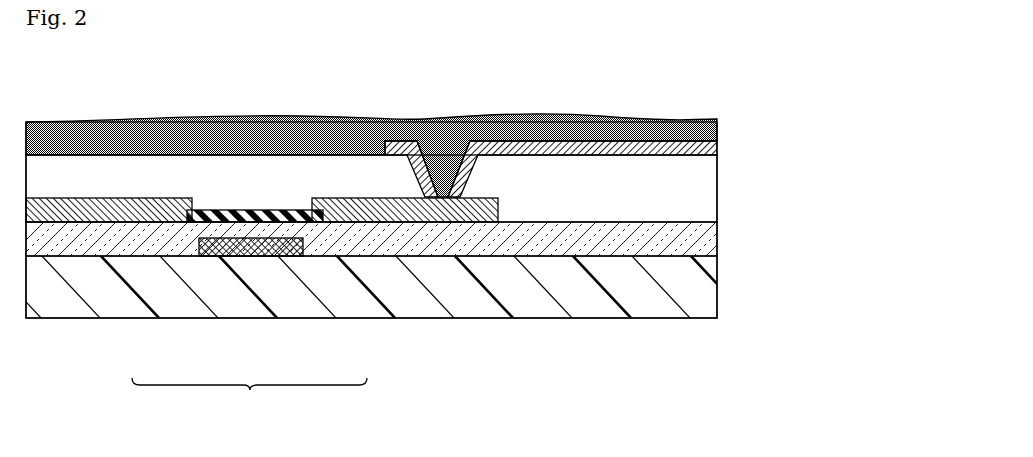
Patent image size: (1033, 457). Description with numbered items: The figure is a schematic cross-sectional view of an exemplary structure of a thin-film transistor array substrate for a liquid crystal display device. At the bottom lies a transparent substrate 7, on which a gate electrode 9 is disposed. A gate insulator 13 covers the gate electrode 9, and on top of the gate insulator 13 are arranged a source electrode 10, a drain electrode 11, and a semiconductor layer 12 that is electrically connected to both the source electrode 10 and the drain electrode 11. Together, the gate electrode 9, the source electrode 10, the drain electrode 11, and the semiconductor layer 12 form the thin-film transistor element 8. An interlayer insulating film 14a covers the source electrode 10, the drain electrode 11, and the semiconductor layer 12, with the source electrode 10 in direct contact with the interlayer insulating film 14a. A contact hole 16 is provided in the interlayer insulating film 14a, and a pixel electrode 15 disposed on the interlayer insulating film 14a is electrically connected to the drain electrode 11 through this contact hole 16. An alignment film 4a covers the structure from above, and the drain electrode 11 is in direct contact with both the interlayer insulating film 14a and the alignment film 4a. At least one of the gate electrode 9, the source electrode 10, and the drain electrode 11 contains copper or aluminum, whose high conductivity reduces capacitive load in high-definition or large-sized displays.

The alignment film 4a is at (718, 123).
The transparent substrate 7 is at (703, 290).
The thin-film transistor element 8 is at (249, 400).
The gate electrode 9 is at (262, 245).
The source electrode 10 is at (118, 212).
The drain electrode 11 is at (380, 210).
The semiconductor layer 12 is at (223, 213).
The gate insulator 13 is at (700, 241).
The interlayer insulating film 14a is at (703, 191).
The pixel electrode 15 is at (705, 149).
The contact hole 16 is at (443, 167).